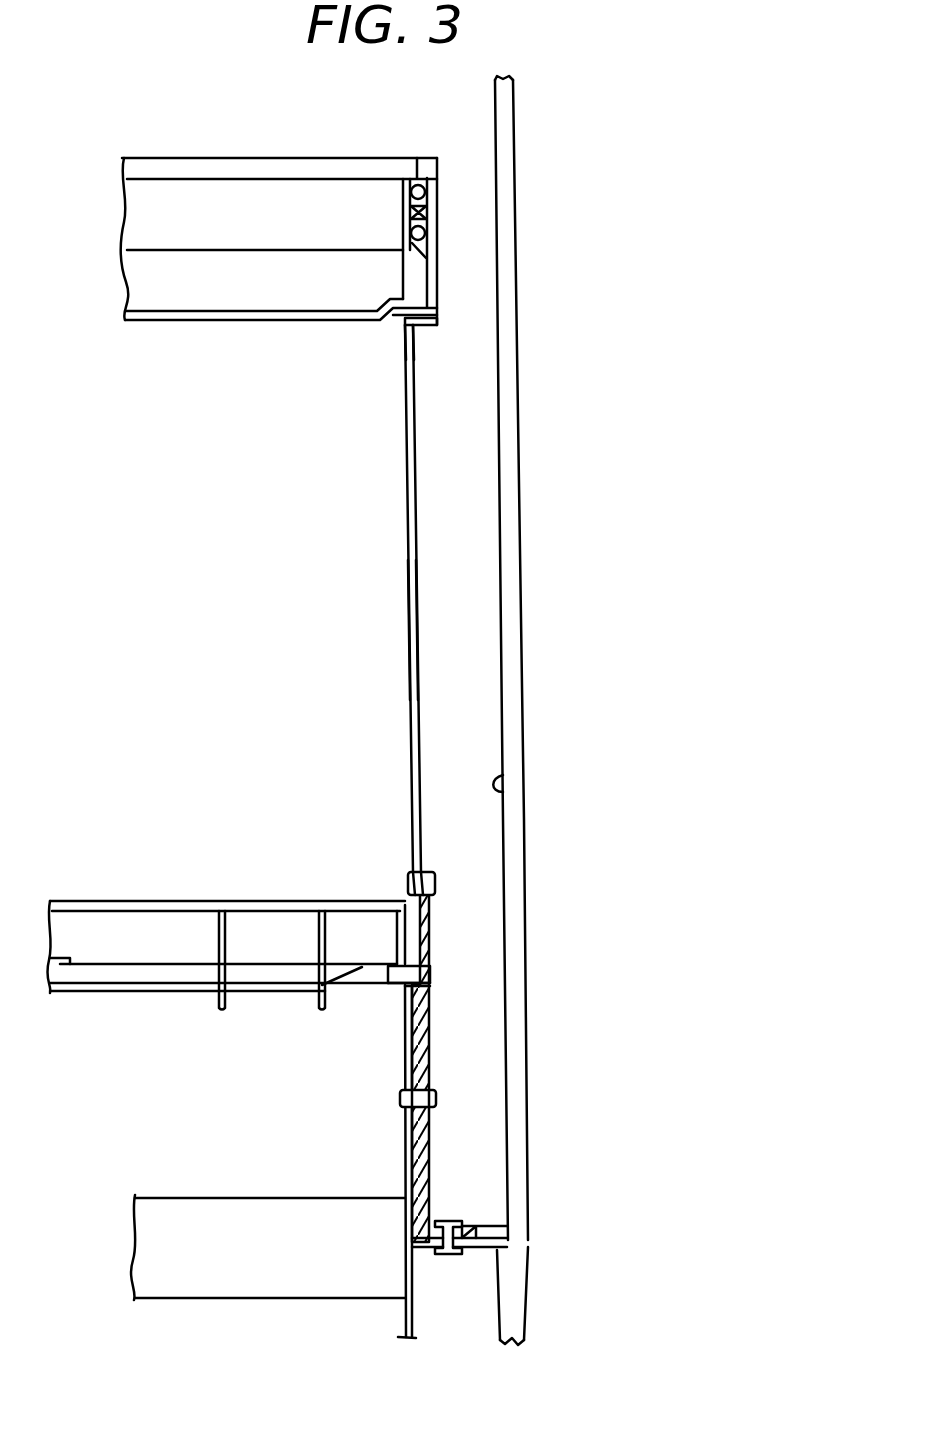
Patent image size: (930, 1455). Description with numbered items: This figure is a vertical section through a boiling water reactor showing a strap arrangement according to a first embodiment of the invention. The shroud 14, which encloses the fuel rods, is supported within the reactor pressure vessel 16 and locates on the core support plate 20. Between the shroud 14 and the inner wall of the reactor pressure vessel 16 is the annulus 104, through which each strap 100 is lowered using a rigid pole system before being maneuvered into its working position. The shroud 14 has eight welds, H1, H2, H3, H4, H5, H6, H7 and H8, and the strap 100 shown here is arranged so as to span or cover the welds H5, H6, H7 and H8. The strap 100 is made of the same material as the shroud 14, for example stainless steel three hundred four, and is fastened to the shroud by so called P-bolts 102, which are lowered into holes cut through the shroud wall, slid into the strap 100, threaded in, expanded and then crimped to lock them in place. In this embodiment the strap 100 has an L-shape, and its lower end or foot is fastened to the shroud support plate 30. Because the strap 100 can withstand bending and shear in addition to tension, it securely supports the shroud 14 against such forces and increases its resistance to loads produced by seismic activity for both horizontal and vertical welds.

The shroud 14 is at (418, 733).
The reactor pressure vessel 16 is at (506, 790).
The core support plate 20 is at (253, 900).
The shroud support plate 30 is at (497, 1250).
The strap 100 is at (433, 1065).
The P-bolt 102 is at (410, 880).
The annulus 104 is at (470, 487).
The weld H1 is at (438, 181).
The weld H2 is at (437, 313).
The weld H3 is at (414, 325).
The weld H4 is at (412, 636).
The weld H5 is at (424, 966).
The weld H6 is at (430, 986).
The weld H7 is at (437, 1200).
The weld H8 is at (480, 1226).